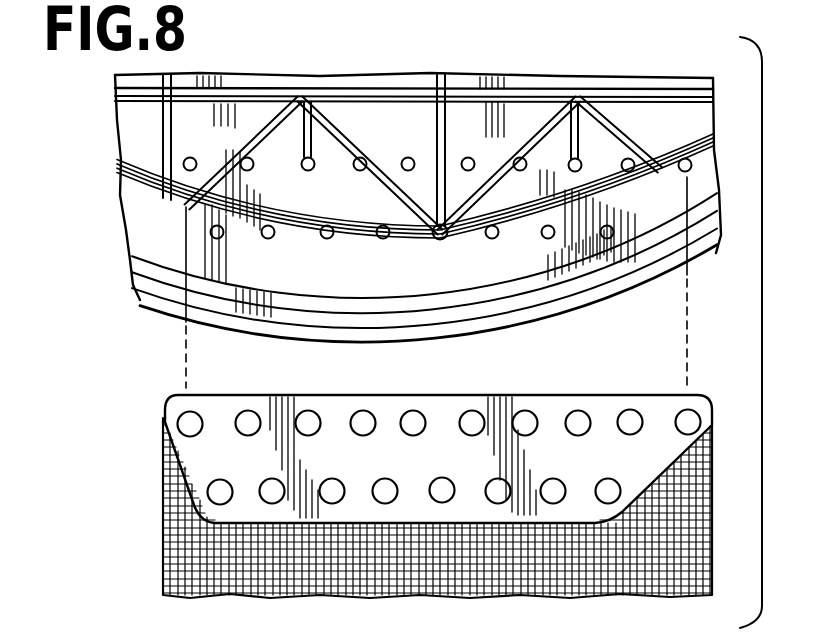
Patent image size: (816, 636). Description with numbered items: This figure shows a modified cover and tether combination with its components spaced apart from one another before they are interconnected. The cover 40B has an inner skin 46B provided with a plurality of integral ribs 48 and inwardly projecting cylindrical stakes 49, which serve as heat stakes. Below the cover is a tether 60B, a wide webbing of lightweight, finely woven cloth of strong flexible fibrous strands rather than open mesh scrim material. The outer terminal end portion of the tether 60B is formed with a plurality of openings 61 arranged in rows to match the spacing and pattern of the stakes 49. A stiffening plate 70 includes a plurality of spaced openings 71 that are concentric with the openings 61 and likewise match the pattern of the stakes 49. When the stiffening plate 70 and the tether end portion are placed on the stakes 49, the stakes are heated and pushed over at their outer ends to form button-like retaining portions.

The cover 40B is at (580, 344).
The inner skin 46B is at (402, 131).
The integral ribs 48 is at (258, 143).
The cylindrical stakes 49 is at (270, 238).
The tether 60B is at (378, 583).
The openings 61 is at (368, 416).
The stiffening plate 70 is at (438, 412).
The spaced openings 71 is at (313, 418).